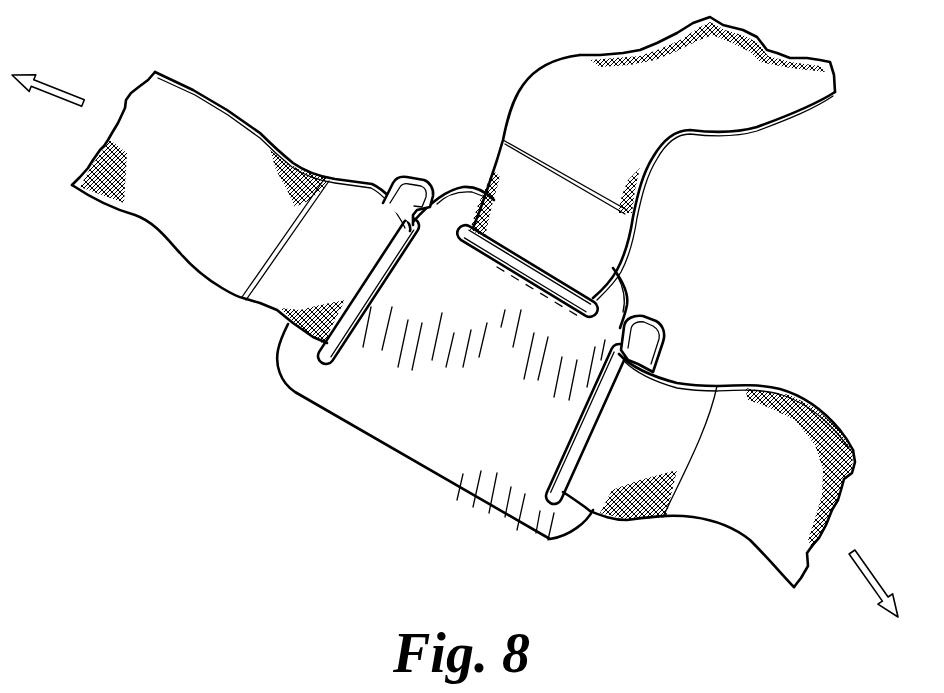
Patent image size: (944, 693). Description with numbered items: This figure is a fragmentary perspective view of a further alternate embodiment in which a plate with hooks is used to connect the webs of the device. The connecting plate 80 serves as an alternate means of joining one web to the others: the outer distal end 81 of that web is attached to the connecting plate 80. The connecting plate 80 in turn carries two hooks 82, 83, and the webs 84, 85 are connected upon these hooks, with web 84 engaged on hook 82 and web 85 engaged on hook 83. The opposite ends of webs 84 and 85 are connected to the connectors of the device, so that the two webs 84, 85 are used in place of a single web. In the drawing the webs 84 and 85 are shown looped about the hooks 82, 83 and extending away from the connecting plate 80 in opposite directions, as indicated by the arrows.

The connecting plate 80 is at (397, 409).
The outer distal end 81 is at (530, 200).
The hook 82 is at (407, 178).
The hook 83 is at (655, 340).
The web 84 is at (180, 216).
The web 85 is at (728, 512).